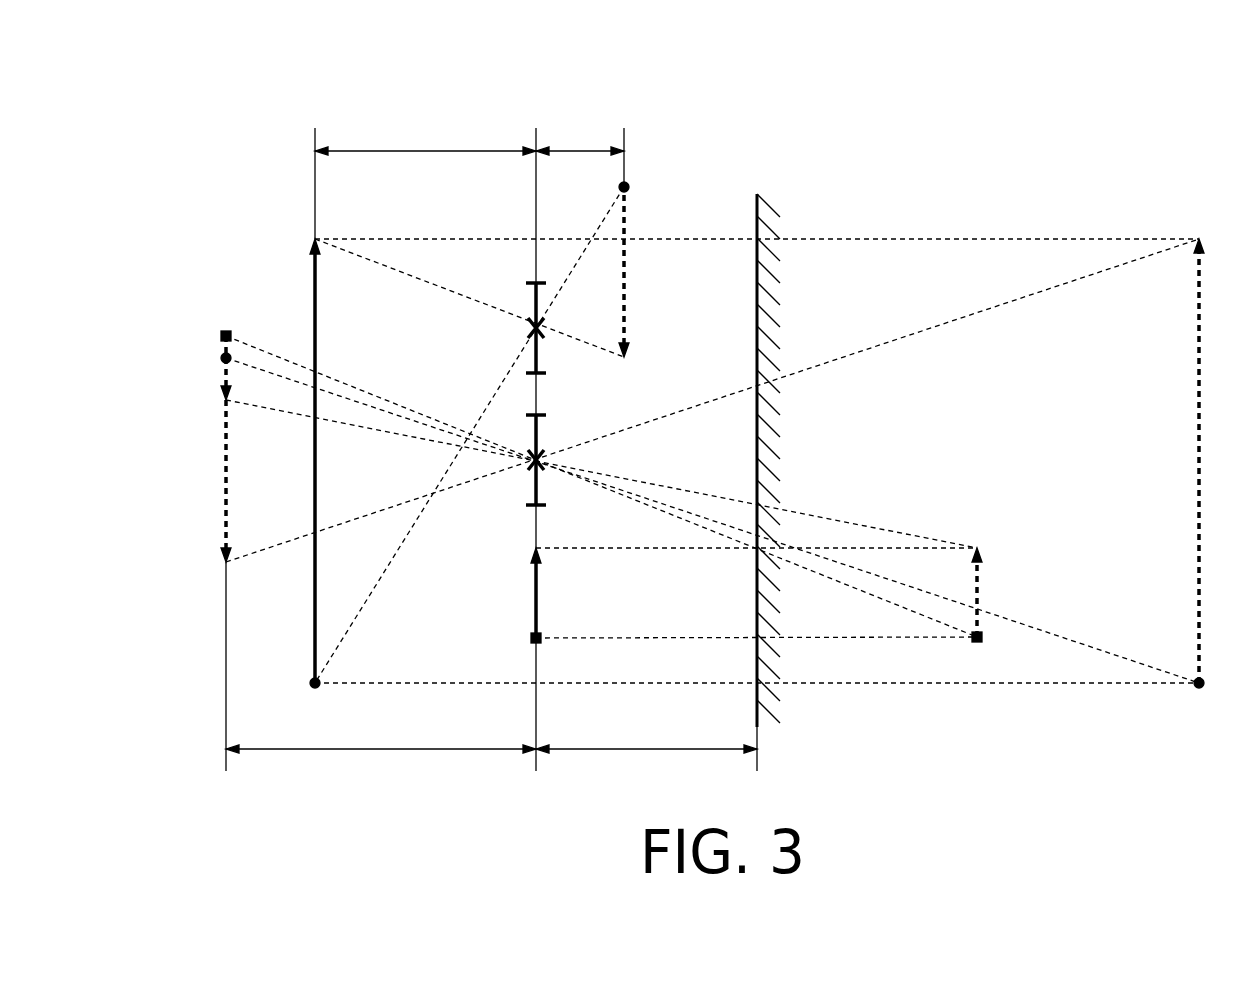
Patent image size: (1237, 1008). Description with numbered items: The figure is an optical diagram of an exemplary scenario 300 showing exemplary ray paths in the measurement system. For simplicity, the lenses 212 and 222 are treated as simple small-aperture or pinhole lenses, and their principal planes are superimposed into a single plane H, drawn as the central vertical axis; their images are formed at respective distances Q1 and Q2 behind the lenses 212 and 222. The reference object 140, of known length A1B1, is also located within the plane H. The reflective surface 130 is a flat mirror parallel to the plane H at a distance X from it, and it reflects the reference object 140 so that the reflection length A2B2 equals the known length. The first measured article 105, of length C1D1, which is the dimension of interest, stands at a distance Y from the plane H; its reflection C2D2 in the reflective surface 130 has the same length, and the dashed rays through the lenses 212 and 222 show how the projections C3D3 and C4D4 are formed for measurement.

The exemplary scenario 300 is at (296, 68).
The first measured article 105 is at (315, 350).
The lens 222 is at (536, 305).
The lens 212 is at (536, 440).
The reference object 140 is at (536, 608).
The reflective surface 130 is at (757, 305).